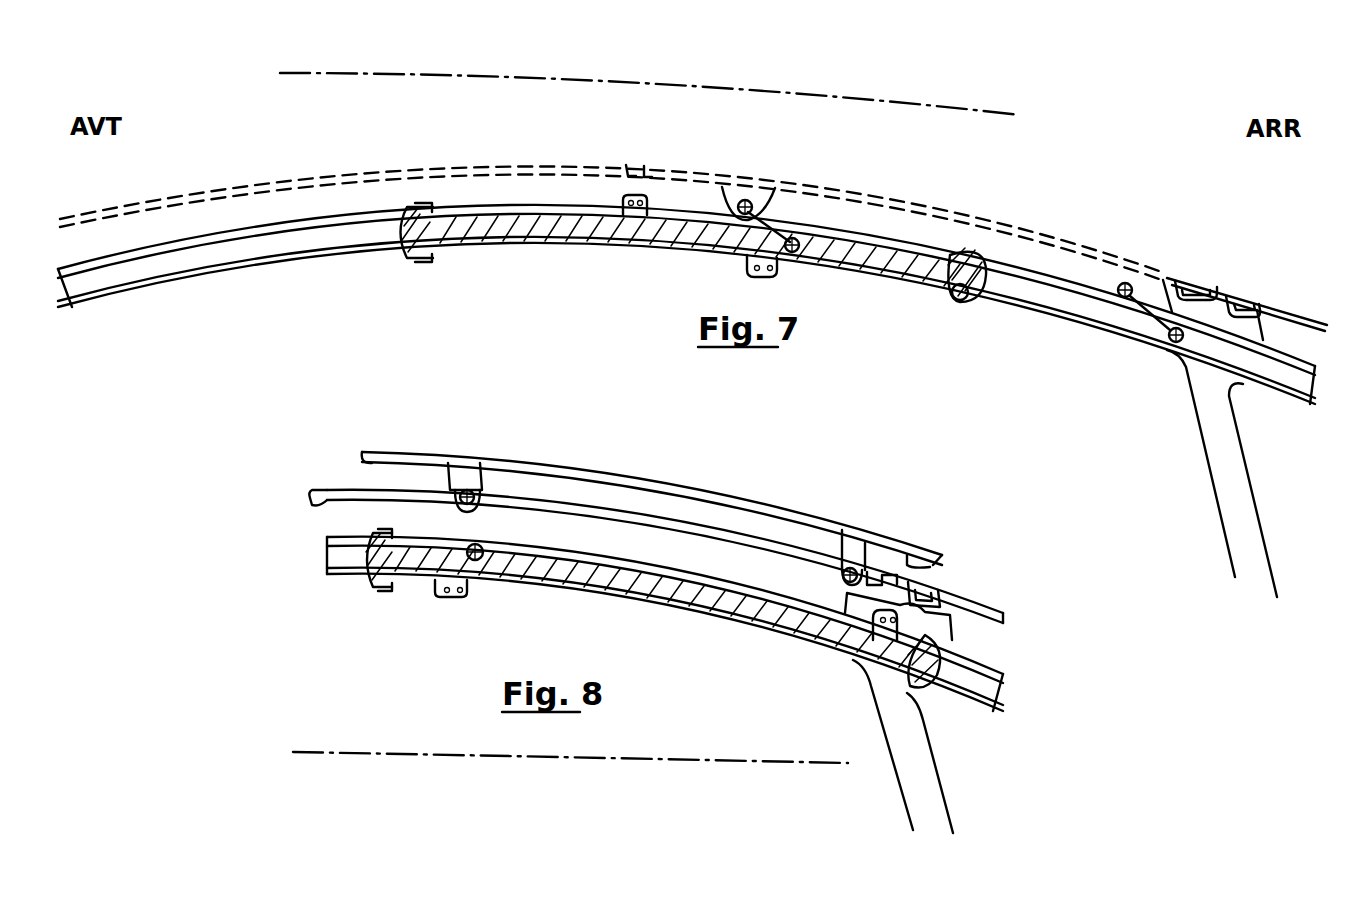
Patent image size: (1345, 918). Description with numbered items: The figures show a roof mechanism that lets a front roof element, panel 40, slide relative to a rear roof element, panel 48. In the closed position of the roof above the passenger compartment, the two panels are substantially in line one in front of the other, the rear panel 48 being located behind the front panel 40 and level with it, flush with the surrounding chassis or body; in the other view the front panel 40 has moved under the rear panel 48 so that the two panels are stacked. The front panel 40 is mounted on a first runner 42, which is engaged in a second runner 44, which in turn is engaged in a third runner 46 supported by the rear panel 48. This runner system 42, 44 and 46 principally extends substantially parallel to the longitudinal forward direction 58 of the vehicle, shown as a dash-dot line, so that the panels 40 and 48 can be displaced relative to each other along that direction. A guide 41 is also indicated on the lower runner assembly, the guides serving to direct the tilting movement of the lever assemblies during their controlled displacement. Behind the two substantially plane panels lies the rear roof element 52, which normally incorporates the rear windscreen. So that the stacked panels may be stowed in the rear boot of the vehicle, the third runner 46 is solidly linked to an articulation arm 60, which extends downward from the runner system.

In FIG. 7, the front roof element (panel) 40 is at (400, 168).
In FIG. 8, the front roof element (panel) 40 is at (318, 488).
In FIG. 8, the guide 41 is at (652, 620).
In FIG. 7, the first runner 42 is at (330, 238).
In FIG. 8, the first runner 42 is at (665, 624).
In FIG. 7, the second runner 44 is at (678, 228).
In FIG. 8, the second runner 44 is at (668, 590).
In FIG. 7, the third runner 46 is at (1058, 298).
In FIG. 7, the rear roof element (panel) 48 is at (1052, 232).
In FIG. 8, the rear roof element (panel) 48 is at (712, 493).
In FIG. 7, the rear roof element 52 is at (1290, 300).
In FIG. 7, the longitudinal forward direction 58 is at (578, 78).
In FIG. 8, the longitudinal forward direction 58 is at (497, 755).
In FIG. 7, the arm 60 is at (1210, 405).
In FIG. 8, the arm 60 is at (890, 710).